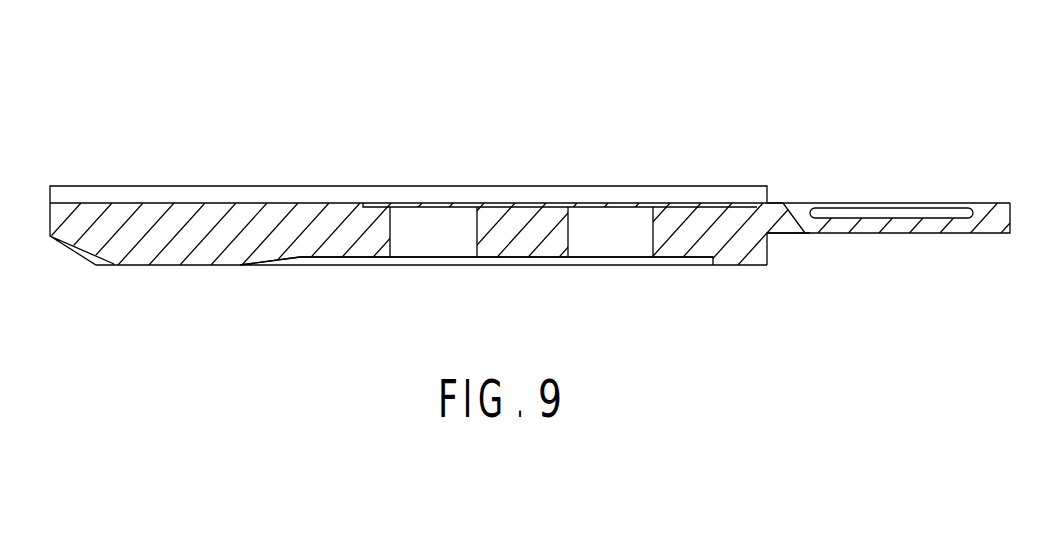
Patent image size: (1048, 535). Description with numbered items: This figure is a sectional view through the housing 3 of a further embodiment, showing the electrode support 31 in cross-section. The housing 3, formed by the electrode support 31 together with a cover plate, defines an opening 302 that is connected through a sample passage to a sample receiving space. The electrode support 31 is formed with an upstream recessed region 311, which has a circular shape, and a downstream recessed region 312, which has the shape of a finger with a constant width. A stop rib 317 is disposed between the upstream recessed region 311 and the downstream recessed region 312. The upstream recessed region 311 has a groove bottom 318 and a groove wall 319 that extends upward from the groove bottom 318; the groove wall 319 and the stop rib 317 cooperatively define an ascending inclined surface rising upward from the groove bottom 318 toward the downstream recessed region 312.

The housing 3 is at (315, 158).
The electrode support 31 is at (222, 186).
The opening 302 is at (957, 208).
The upstream recessed region 311 is at (800, 213).
The downstream recessed region 312 is at (695, 206).
The stop rib 317 is at (790, 207).
The groove bottom 318 is at (911, 208).
The groove wall 319 is at (813, 207).